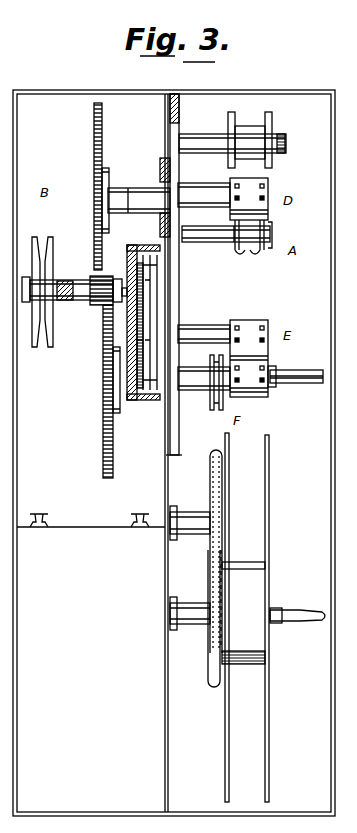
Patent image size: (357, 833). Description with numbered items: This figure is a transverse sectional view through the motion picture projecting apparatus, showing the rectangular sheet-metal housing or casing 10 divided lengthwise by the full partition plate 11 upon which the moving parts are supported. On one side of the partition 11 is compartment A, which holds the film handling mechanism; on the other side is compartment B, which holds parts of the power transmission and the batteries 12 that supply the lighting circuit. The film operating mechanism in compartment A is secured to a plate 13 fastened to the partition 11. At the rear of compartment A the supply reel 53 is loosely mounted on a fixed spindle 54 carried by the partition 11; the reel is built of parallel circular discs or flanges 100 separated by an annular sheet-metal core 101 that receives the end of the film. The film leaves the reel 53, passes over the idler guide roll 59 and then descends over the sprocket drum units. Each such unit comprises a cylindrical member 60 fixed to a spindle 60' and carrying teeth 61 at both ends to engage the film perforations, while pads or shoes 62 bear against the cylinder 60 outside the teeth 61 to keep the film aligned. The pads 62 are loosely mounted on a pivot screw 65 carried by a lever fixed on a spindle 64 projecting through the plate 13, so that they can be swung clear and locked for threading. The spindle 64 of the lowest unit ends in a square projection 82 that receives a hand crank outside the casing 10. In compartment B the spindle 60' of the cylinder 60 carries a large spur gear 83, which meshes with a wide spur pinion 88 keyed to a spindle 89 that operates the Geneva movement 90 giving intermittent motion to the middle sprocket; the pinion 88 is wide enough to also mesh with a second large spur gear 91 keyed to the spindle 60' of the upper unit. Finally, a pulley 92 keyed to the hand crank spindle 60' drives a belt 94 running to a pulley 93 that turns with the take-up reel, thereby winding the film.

The housing or casing 10 is at (305, 90).
The partition plate 11 is at (165, 466).
The batteries 12 is at (99, 527).
The plate 13 is at (170, 286).
The reel 53 is at (269, 530).
The fixed spindle 54 is at (290, 624).
The idler guide roll 59 is at (260, 128).
The cylindrical member 60 is at (242, 293).
The spindle 60' is at (169, 270).
The teeth 61 is at (265, 196).
The pads or shoes 62 is at (249, 245).
The spindle 64 is at (208, 242).
The pivot screw 65 is at (273, 230).
The square projection 82 is at (298, 370).
The spur gear 83 is at (103, 391).
The spur pinion 88 is at (93, 280).
The spindle 89 is at (126, 270).
The Geneva movement 90 is at (140, 335).
The spur gear 91 is at (94, 144).
The pulley 92 is at (210, 405).
The pulley 93 is at (208, 573).
The belt 94 is at (212, 660).
The circular discs or flanges 100 is at (229, 449).
The annular member or core 101 is at (252, 563).